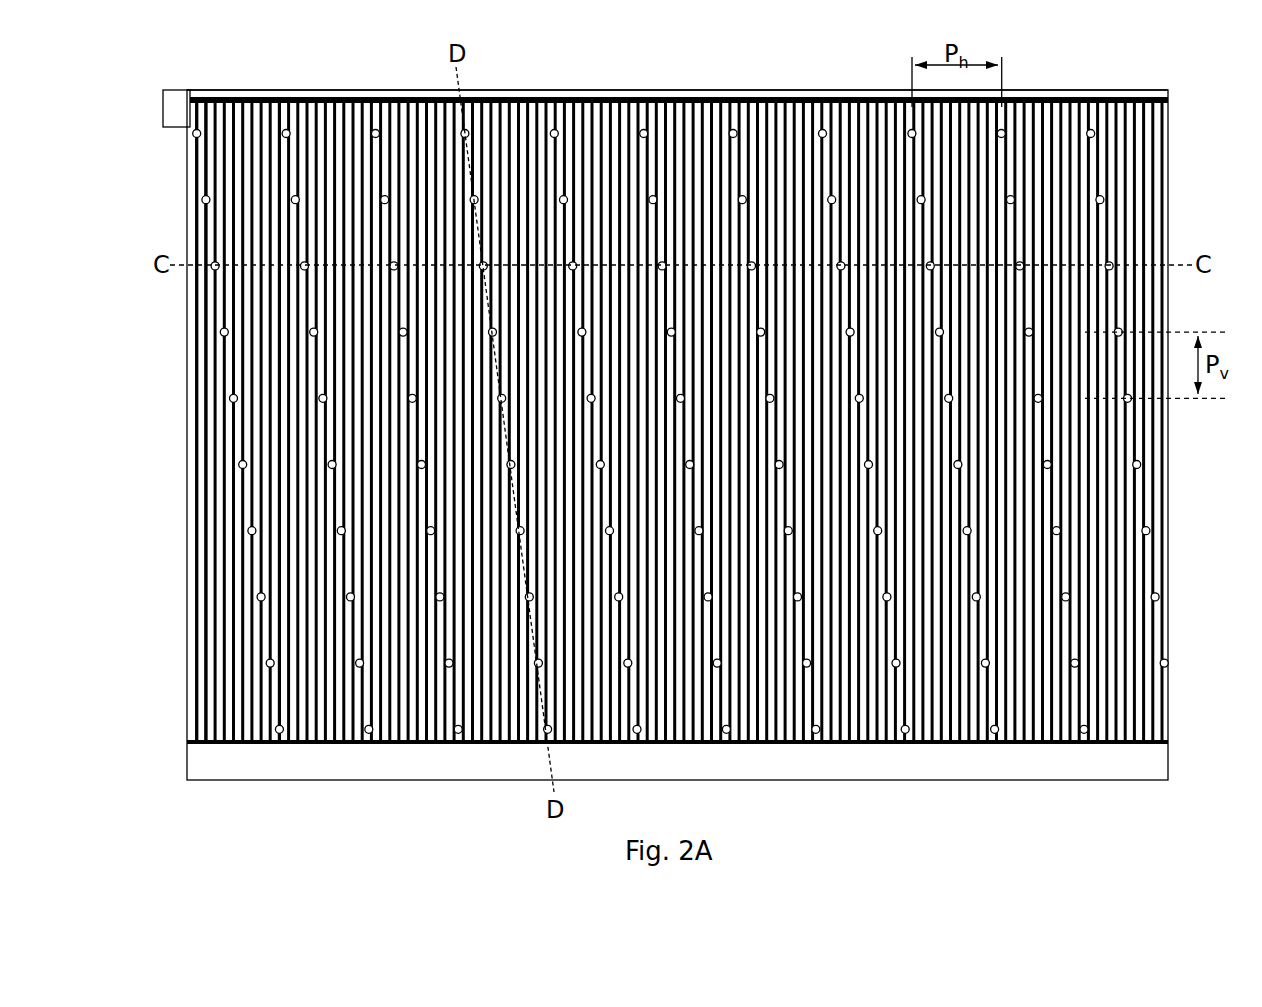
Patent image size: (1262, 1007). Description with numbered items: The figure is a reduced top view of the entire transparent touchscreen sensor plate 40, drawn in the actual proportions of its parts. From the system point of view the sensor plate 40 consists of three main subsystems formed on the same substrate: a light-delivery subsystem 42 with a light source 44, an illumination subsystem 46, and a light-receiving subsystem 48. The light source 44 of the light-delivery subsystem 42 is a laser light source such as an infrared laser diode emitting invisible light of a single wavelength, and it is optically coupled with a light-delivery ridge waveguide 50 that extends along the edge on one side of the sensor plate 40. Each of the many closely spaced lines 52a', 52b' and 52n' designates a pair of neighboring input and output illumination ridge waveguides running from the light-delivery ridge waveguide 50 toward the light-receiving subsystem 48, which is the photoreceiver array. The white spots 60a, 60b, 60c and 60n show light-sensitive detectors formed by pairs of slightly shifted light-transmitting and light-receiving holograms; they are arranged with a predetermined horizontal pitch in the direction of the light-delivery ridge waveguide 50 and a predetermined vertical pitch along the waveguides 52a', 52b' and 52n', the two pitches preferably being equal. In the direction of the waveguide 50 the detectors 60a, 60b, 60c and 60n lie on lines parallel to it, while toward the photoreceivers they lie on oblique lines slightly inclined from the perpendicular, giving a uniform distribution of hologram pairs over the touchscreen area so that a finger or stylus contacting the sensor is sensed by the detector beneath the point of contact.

The touchscreen sensor plate 40 is at (1179, 784).
The light-delivery subsystem 42 is at (347, 87).
The light source 44 is at (175, 110).
The illumination subsystem 46 is at (1120, 157).
The light-receiving subsystem 48 is at (878, 764).
The light-delivery ridge waveguide 50 is at (548, 97).
The illumination ridge waveguide line 52a' is at (147, 421).
The illumination ridge waveguide line 52b' is at (152, 421).
The illumination ridge waveguide line 52n' is at (321, 462).
The light-sensitive detector 60a is at (200, 118).
The light-sensitive detector 60b is at (204, 197).
The light-sensitive detector 60c is at (212, 268).
The light-sensitive detector 60n is at (276, 729).